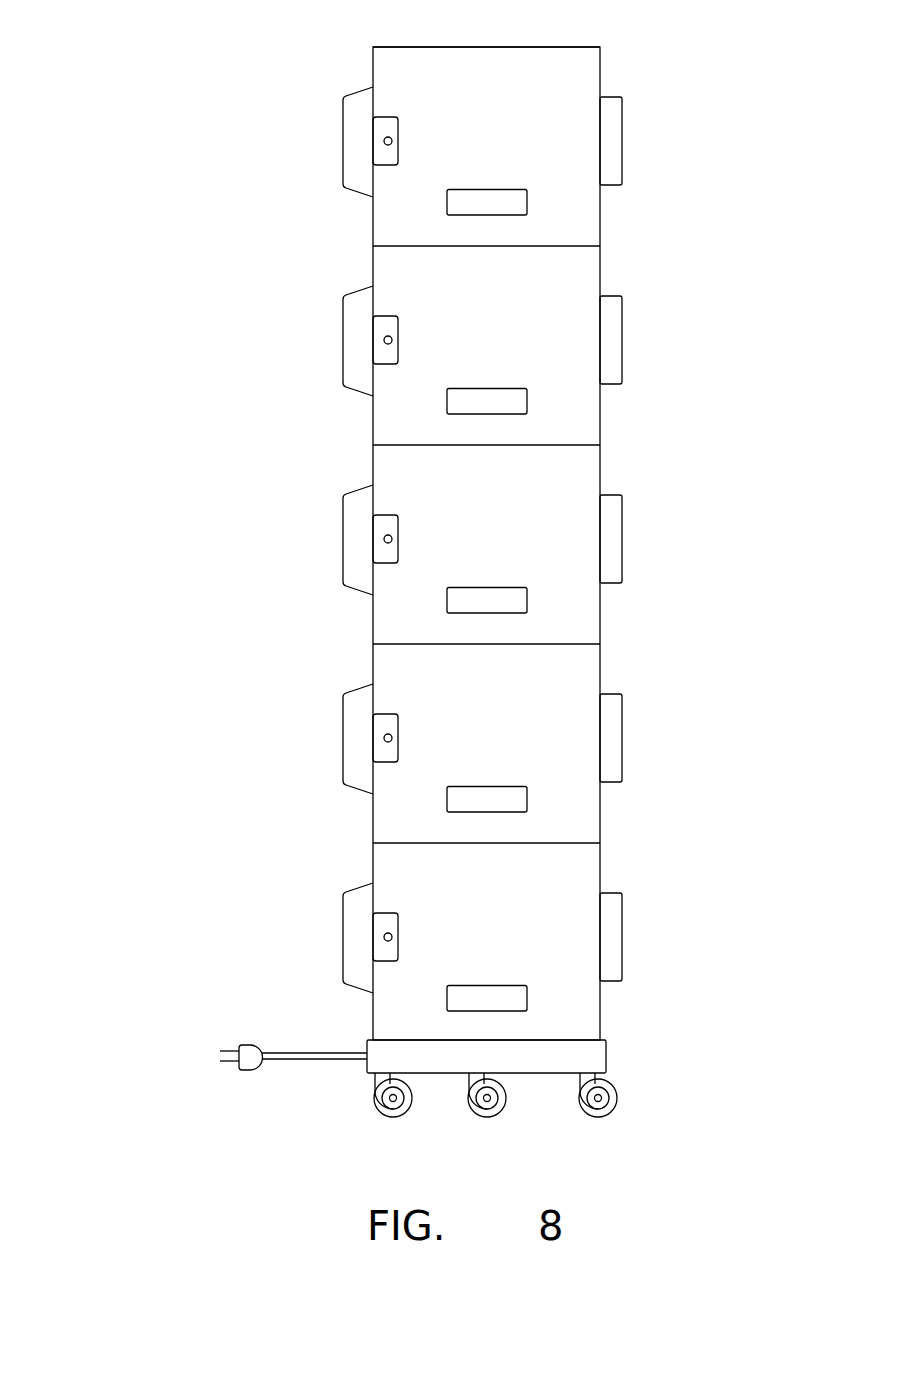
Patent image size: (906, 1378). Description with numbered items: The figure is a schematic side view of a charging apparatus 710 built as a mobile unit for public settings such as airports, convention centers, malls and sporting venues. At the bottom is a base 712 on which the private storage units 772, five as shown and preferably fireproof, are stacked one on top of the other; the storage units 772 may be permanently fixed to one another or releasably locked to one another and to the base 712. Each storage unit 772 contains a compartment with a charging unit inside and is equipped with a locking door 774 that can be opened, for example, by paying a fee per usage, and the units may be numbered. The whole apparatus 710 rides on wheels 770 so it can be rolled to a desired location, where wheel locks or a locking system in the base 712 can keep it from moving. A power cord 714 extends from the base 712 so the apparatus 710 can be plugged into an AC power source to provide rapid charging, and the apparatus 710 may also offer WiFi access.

The charging apparatus 710 is at (151, 134).
The base 712 is at (600, 1057).
The power cord 714 is at (249, 1046).
The wheels 770 is at (385, 1110).
The storage units 772 is at (540, 543).
The locking doors 774 is at (381, 345).